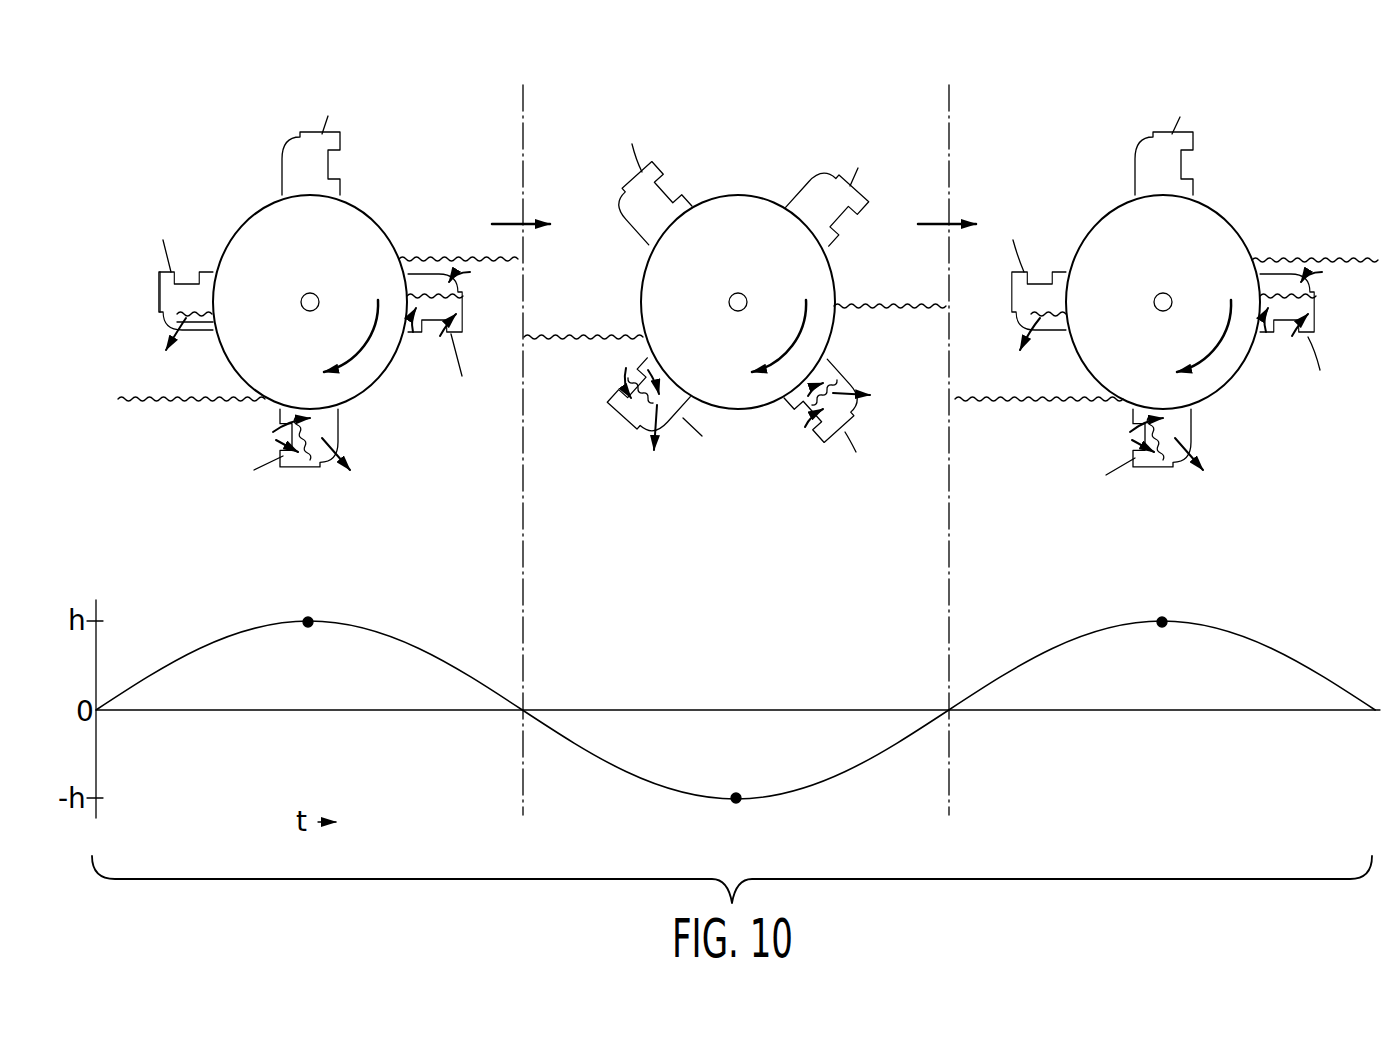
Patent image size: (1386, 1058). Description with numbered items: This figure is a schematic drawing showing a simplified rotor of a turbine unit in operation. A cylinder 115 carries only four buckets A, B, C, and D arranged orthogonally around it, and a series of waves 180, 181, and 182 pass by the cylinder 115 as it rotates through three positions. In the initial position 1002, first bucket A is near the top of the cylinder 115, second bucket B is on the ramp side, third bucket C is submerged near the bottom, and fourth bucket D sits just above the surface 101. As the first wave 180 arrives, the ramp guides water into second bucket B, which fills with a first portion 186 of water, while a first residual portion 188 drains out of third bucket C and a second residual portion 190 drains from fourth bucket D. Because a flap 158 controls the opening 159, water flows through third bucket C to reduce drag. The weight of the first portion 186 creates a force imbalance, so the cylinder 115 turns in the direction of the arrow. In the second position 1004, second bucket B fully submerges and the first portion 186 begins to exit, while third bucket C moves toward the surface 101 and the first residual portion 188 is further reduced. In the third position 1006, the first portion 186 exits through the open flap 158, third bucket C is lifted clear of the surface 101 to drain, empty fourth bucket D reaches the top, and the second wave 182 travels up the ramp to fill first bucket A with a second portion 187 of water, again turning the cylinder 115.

The initial position 1002 is at (161, 128).
The second position 1004 is at (594, 118).
The third position 1006 is at (1047, 128).
The cylinder 115 is at (374, 222).
The flap 158 is at (338, 168).
The opening 159 is at (160, 289).
The surface 101 is at (132, 398).
The second residual portion of water 190 is at (196, 326).
The first portion of water 186 is at (429, 305).
The first residual portion of water 188 is at (308, 462).
The second portion of water 187 is at (1283, 307).
The first wave 180 is at (306, 621).
The wave 181 is at (734, 797).
The second wave 182 is at (1164, 621).